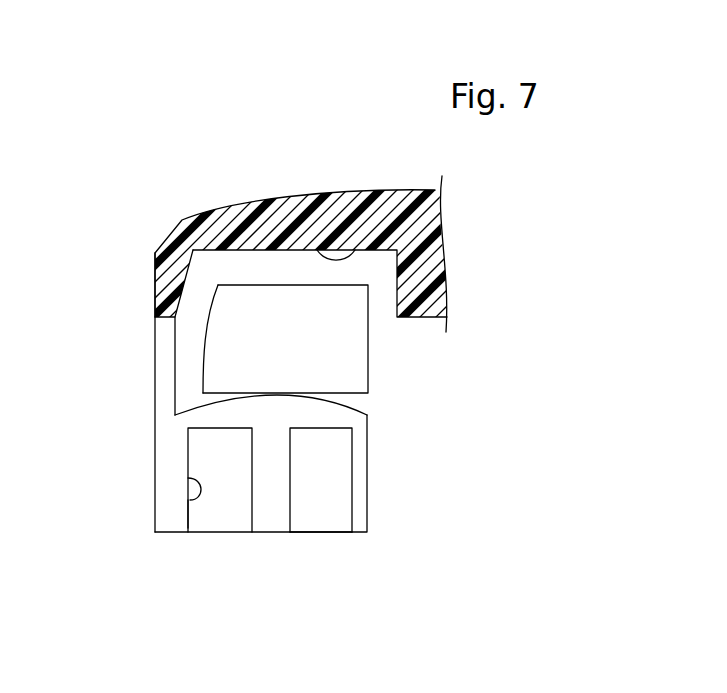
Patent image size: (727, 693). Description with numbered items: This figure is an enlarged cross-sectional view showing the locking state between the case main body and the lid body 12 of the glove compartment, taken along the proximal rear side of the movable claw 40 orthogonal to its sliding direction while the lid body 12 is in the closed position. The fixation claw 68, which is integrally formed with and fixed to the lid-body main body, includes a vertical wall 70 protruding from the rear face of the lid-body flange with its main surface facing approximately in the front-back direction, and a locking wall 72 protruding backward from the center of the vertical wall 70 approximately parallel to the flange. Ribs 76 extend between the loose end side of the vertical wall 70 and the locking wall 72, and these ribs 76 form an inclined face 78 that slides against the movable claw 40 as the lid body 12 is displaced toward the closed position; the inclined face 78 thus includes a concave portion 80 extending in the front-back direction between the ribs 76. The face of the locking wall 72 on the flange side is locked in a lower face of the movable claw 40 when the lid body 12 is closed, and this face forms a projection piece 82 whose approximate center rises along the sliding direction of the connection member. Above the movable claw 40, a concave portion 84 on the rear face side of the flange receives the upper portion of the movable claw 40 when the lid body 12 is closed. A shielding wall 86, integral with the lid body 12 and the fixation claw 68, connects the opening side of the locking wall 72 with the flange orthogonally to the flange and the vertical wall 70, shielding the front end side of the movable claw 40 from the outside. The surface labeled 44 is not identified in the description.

The lid body 12 is at (158, 220).
The cavity wall 44 is at (202, 352).
The concave portion 84 is at (352, 253).
The movable claw 40 is at (393, 354).
The shielding wall 86 is at (157, 367).
The projection piece 82 is at (347, 397).
The locking wall 72 is at (216, 440).
The concave portion 80 is at (188, 479).
The fixation claw 68 is at (390, 497).
The ribs 76 is at (272, 518).
The inclined face 78 is at (316, 545).
The vertical wall 70 is at (325, 480).